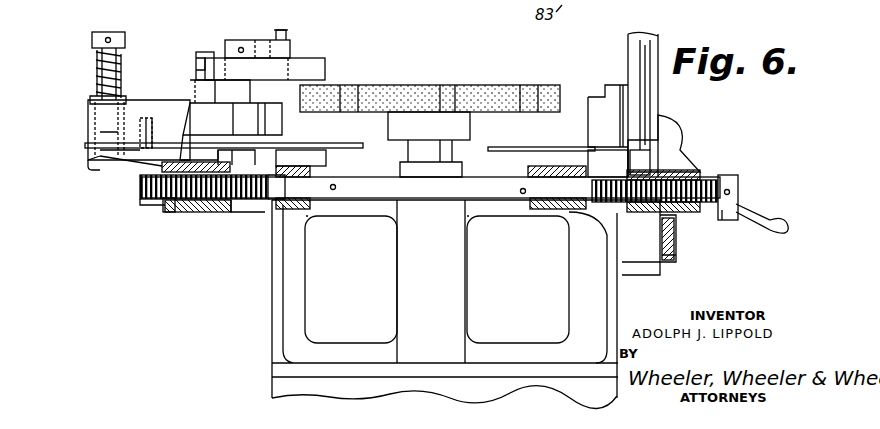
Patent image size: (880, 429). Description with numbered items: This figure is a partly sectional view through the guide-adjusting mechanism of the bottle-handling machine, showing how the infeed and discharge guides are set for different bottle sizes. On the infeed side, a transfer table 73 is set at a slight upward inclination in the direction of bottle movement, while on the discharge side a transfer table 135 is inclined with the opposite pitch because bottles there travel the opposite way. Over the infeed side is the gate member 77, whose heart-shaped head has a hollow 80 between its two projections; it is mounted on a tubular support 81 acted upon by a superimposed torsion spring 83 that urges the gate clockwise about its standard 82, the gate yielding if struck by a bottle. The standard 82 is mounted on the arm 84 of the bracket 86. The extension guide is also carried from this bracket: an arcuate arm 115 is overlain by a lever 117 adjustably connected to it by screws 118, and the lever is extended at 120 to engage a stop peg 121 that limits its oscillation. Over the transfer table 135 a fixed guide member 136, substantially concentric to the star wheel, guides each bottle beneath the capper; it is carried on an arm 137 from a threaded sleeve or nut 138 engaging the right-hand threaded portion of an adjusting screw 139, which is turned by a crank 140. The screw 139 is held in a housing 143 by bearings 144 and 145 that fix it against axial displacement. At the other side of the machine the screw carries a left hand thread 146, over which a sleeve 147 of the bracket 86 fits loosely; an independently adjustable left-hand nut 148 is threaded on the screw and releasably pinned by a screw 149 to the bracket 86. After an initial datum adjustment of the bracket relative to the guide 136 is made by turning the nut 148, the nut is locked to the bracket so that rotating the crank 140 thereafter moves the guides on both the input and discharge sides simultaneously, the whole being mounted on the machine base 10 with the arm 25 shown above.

The base frame 10 is at (285, 383).
The arm 25 is at (448, 96).
The transfer table 73 is at (305, 145).
The gate member 77 is at (153, 112).
The hollow 80 is at (250, 119).
The tubular support 81 is at (88, 110).
The standard 82 is at (88, 165).
The torsion spring 83 is at (112, 70).
The arm 84 is at (142, 168).
The bracket 86 is at (163, 212).
The arcuate arm 115 is at (314, 70).
The lever 117 is at (262, 44).
The screws 118 is at (281, 35).
The extension of lever 120 is at (196, 72).
The stop peg 121 is at (203, 52).
The transfer table 135 is at (535, 147).
The fixed guide member 136 is at (625, 117).
The arm 137 is at (668, 147).
The threaded sleeve or nut 138 is at (690, 175).
The adjusting screw 139 is at (700, 177).
The crank 140 is at (735, 222).
The housing 143 is at (505, 210).
The bearing 144 is at (555, 210).
The bearing 145 is at (322, 210).
The left hand thread 146 is at (140, 190).
The sleeve 147 is at (190, 212).
The nut 148 is at (210, 212).
The screw 149 is at (163, 215).